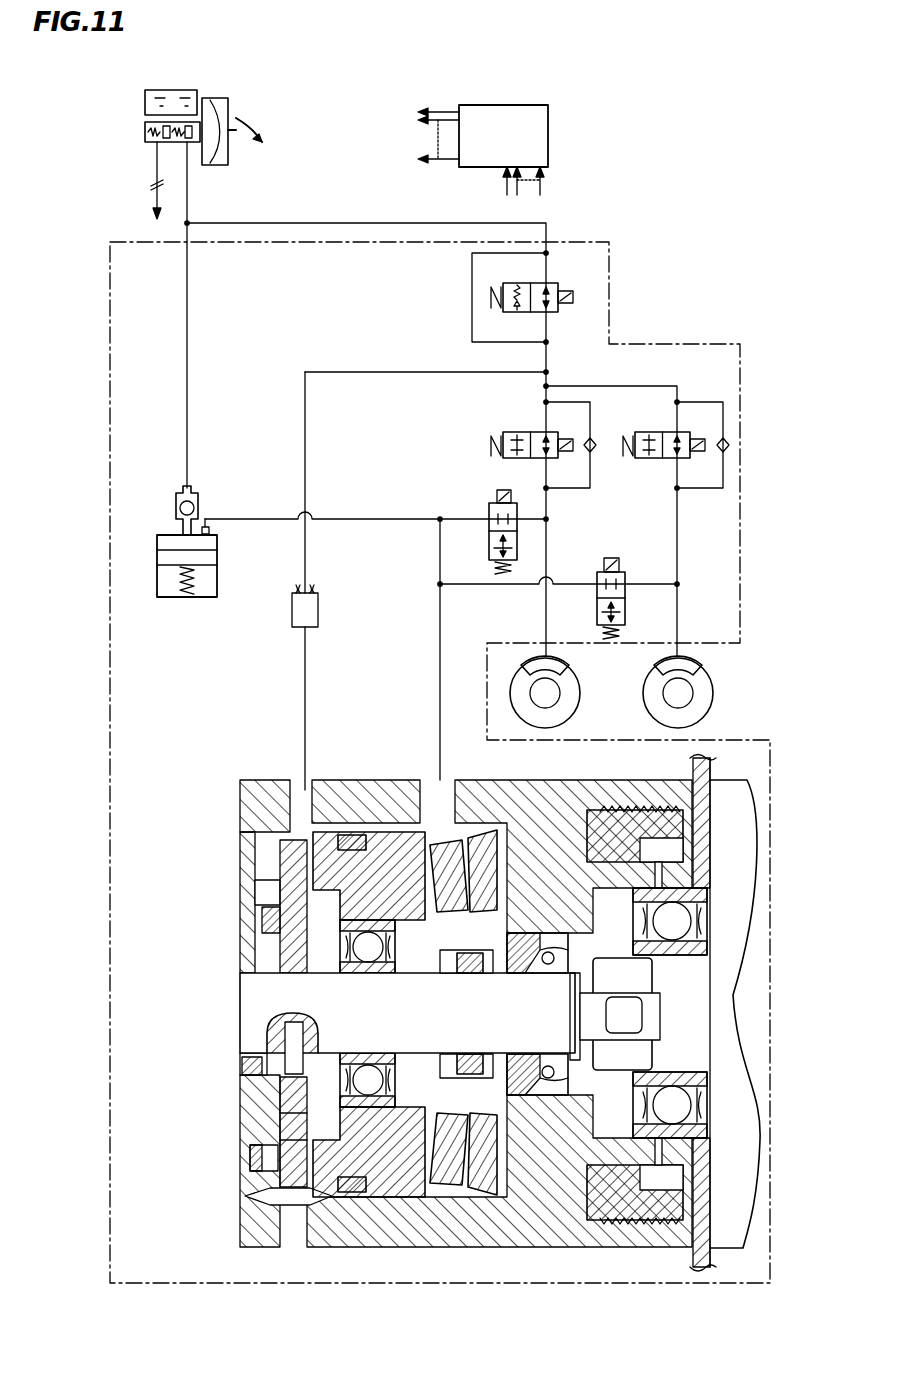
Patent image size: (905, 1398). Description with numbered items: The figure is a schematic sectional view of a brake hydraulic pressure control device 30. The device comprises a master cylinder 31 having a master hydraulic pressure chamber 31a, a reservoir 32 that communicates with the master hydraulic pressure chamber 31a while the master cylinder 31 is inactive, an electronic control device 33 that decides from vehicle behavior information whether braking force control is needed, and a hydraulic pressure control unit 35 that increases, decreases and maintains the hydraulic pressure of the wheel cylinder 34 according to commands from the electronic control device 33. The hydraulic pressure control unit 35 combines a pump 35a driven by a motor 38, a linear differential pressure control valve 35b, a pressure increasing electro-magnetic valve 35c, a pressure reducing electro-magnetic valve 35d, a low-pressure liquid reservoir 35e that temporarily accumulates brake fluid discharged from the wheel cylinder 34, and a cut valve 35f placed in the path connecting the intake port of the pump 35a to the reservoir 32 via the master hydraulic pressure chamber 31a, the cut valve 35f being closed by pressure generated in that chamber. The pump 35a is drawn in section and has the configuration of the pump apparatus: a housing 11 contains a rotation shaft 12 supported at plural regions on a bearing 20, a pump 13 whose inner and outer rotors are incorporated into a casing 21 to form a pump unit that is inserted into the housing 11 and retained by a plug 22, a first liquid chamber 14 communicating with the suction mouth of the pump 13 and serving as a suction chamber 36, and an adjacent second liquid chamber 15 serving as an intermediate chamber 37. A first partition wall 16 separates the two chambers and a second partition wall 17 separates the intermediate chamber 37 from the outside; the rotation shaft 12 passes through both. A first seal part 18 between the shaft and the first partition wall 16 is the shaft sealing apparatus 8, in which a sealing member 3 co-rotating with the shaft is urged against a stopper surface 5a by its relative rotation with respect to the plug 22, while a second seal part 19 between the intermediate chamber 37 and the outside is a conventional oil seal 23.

The sealing member 3 is at (433, 1048).
The stopper surface 5a is at (486, 1052).
The shaft sealing apparatus 8 is at (400, 1150).
The housing 11 is at (262, 1228).
The rotation shaft 12 is at (258, 1013).
The pump 13 is at (290, 1150).
The first liquid chamber 14 is at (410, 955).
The second liquid chamber 15 is at (560, 1047).
The first partition wall 16 is at (478, 850).
The second partition wall 17 is at (553, 925).
The first seal part 18 is at (513, 1190).
The second seal part 19 is at (553, 1200).
The bearing 20 is at (340, 903).
The casing 21 is at (250, 1118).
The plug 22 is at (640, 858).
The oil seal 23 is at (583, 965).
The brake hydraulic pressure control device 30 is at (718, 240).
The master cylinder 31 is at (232, 103).
The master hydraulic pressure chamber 31a is at (175, 143).
The reservoir 32 is at (170, 98).
The electronic control device 33 is at (533, 135).
The wheel cylinder 34 is at (692, 664).
The hydraulic pressure control unit 35 is at (105, 400).
The pump 35a is at (468, 1252).
The linear differential pressure control valve 35b is at (546, 288).
The pressure increasing electro-magnetic valve 35c is at (523, 432).
The pressure reducing electro-magnetic valve 35d is at (489, 516).
The low-pressure liquid reservoir 35e is at (210, 545).
The cut valve 35f is at (202, 505).
The suction chamber 36 is at (410, 955).
The intermediate chamber 37 is at (560, 1047).
The motor 38 is at (730, 1120).